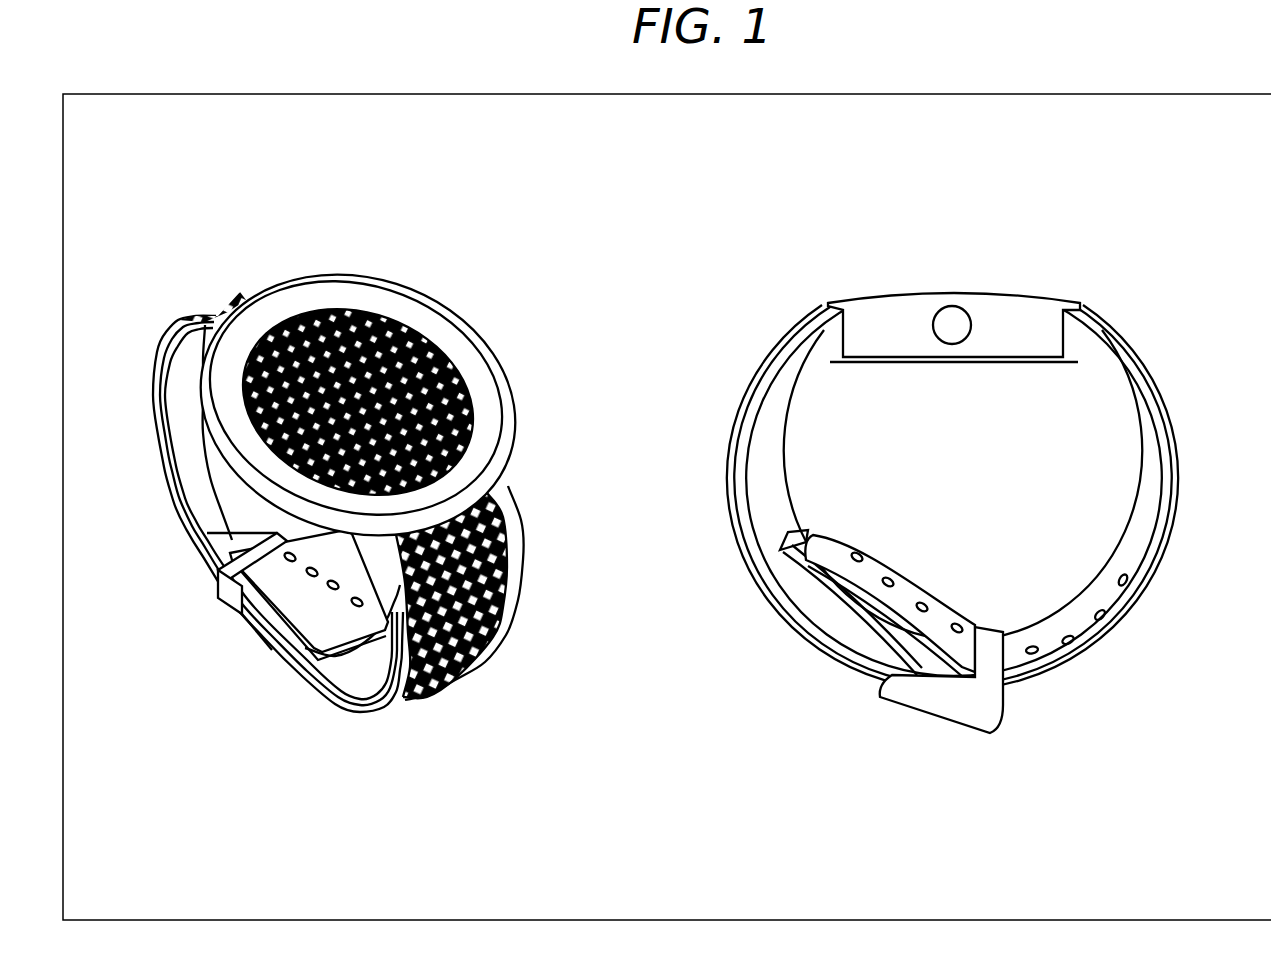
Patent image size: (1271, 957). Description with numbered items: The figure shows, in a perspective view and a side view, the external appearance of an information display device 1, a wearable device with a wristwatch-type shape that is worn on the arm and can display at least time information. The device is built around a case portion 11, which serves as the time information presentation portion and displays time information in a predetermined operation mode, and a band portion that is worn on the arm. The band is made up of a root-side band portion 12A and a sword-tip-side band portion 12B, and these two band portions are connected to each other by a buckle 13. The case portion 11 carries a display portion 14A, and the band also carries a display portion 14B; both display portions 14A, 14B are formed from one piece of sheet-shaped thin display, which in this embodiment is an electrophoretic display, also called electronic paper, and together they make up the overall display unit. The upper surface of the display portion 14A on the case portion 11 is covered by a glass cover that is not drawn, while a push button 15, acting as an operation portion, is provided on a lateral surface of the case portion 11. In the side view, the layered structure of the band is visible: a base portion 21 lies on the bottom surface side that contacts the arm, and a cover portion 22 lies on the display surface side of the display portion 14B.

The information display device 1 is at (489, 276).
The case portion 11 is at (230, 472).
The root-side band portion 12A is at (430, 781).
The sword-tip-side band portion 12B is at (178, 250).
The buckle 13 is at (237, 612).
The display portion 14A is at (383, 342).
The display portion 14B is at (228, 311).
The push button 15 is at (952, 338).
The base portion 21 is at (160, 341).
The cover portion 22 is at (197, 313).